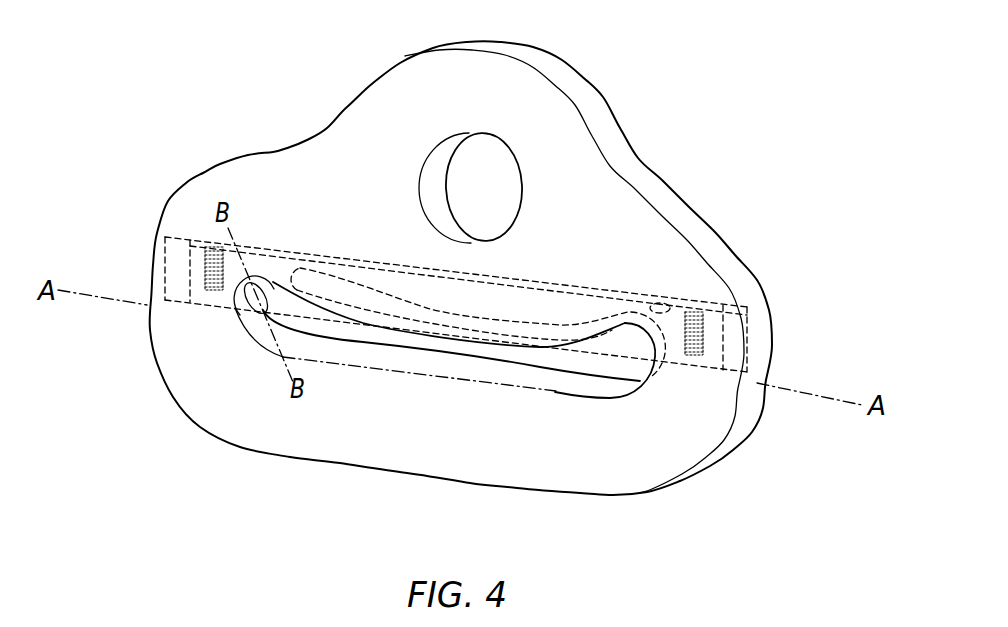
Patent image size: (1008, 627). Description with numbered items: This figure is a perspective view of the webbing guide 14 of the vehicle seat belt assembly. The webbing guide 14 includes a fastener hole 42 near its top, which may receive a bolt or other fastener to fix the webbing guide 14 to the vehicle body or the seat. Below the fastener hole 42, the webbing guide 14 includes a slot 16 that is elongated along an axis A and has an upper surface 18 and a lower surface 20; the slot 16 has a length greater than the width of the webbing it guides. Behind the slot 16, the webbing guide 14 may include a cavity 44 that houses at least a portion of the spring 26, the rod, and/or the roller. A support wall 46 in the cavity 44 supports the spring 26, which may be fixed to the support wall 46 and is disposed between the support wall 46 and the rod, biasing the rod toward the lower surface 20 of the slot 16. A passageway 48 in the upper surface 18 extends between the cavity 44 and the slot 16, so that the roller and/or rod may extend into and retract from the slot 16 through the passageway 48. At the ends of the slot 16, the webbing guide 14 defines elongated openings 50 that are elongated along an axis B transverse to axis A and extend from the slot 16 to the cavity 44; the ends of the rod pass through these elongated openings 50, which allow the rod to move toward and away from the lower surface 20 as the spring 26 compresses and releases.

The webbing guide 14 is at (325, 130).
The fastener hole 42 is at (439, 142).
The support wall 46 is at (527, 305).
The cavity 44 is at (562, 318).
The spring 26 is at (207, 283).
The upper surface 18 is at (363, 335).
The lower surface 20 is at (413, 364).
The slot 16 is at (613, 355).
The passageway 48 is at (505, 334).
The elongated openings 50 is at (248, 306).